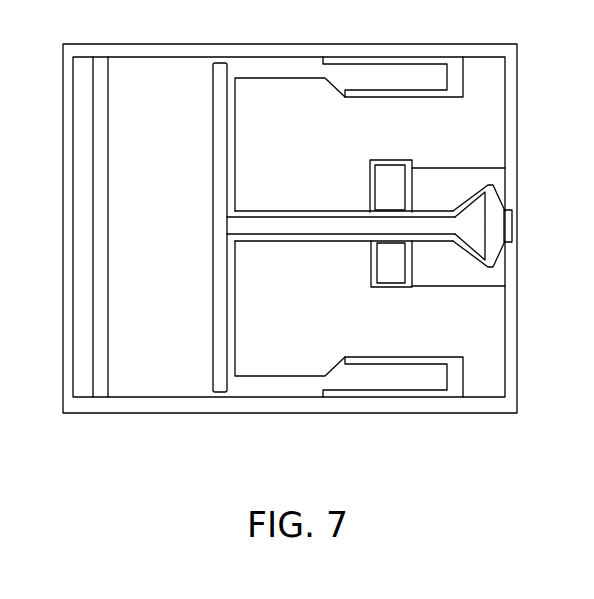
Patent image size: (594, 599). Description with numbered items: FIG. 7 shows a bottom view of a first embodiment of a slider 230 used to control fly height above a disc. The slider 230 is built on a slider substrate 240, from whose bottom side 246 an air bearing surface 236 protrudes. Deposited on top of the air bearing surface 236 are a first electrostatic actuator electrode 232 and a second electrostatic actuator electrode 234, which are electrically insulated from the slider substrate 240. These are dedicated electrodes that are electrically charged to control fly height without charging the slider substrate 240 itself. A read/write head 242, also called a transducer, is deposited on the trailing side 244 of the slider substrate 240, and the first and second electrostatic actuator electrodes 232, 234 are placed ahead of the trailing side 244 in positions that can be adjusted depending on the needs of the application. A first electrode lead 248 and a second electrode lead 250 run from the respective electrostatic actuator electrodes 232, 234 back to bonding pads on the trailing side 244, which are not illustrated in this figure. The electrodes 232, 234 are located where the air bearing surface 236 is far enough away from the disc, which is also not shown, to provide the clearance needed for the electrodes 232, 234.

The slider 230 is at (328, 277).
The first electrostatic actuator electrode 232 is at (388, 186).
The second electrostatic actuator electrode 234 is at (388, 263).
The air bearing surface 236 is at (388, 160).
The slider substrate 240 is at (443, 414).
The read/write head 242 is at (509, 226).
The trailing side 244 is at (506, 124).
The bottom side 246 is at (284, 115).
The first electrode lead 248 is at (468, 168).
The second electrode lead 250 is at (468, 287).